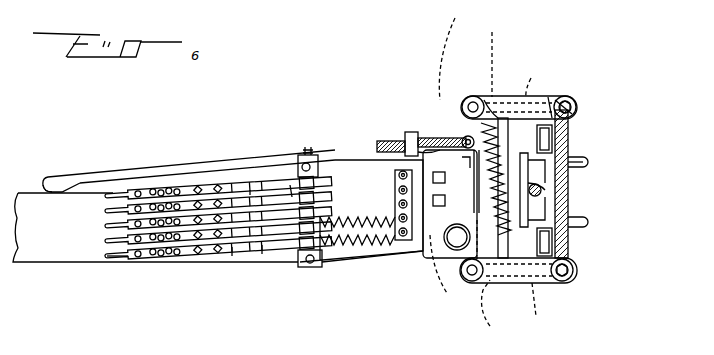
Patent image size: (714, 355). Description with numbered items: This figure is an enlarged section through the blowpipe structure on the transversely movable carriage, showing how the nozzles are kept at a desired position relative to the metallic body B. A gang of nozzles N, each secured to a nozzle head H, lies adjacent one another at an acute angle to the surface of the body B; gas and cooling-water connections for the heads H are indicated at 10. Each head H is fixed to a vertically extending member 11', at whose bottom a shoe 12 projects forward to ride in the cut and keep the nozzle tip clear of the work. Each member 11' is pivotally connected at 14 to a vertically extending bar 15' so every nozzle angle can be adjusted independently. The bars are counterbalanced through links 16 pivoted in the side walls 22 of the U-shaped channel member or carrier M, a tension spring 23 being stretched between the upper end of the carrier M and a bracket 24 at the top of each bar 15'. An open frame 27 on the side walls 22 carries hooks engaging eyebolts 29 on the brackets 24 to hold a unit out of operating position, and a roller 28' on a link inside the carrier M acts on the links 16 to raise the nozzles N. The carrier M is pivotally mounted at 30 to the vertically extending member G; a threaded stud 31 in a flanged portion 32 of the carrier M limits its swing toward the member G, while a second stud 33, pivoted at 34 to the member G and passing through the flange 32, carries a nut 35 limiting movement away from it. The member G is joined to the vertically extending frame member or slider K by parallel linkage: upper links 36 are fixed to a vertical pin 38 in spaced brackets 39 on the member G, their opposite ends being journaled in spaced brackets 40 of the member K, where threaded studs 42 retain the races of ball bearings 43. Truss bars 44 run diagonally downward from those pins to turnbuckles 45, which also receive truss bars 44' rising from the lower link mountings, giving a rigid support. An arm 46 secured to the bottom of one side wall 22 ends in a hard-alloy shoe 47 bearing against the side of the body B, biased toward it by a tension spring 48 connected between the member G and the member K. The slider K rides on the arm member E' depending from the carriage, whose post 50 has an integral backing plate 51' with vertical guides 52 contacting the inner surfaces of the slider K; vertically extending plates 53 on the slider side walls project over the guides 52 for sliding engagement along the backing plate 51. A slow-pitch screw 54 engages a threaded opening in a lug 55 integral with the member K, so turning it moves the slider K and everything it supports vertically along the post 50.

The metallic body B is at (47, 242).
The nozzle head H is at (163, 182).
The nozzle N is at (107, 233).
The conduit connections 10 is at (172, 248).
The vertically extending member 11' is at (234, 265).
The shoe 12 is at (116, 252).
The pivotal connection 14 is at (258, 190).
The vertically extending bar 15' is at (274, 261).
The upper link 16 is at (360, 180).
The side wall 22 is at (360, 165).
The tension spring 23 is at (367, 250).
The bracket 24 is at (320, 145).
The rectangular open frame 27 is at (318, 268).
The roller 28' is at (329, 125).
The eyebolt 29 is at (293, 180).
The pivotal mounting 30 is at (450, 252).
The threaded stud 31 is at (442, 130).
The flanged portion 32 is at (412, 132).
The second threaded stud 33 is at (441, 178).
The pivotal connection 34 is at (458, 134).
The nut 35 is at (400, 142).
The upper link 36 is at (507, 96).
The vertical pin 38 is at (475, 97).
The spaced bracket 39 is at (482, 96).
The spaced bracket 40 is at (542, 98).
The threaded stud 42 is at (573, 97).
The ball bearing 43 is at (582, 97).
The truss bar 44 is at (539, 196).
The truss bar 44' is at (445, 162).
The turnbuckle 45 is at (501, 180).
The arm 46 is at (210, 167).
The shoe 47 is at (55, 185).
The tension spring 48 is at (466, 162).
The post 50 is at (575, 100).
The backing plate 51 is at (564, 86).
The backing plate 51' is at (572, 186).
The vertical guide 52 is at (570, 159).
The vertically extending plate 53 is at (560, 126).
The threaded shaft 54 is at (585, 165).
The lug 55 is at (542, 195).
The channel member M is at (425, 230).
The vertically extending member G is at (483, 239).
The frame member K is at (513, 179).
The arm member E' is at (593, 229).